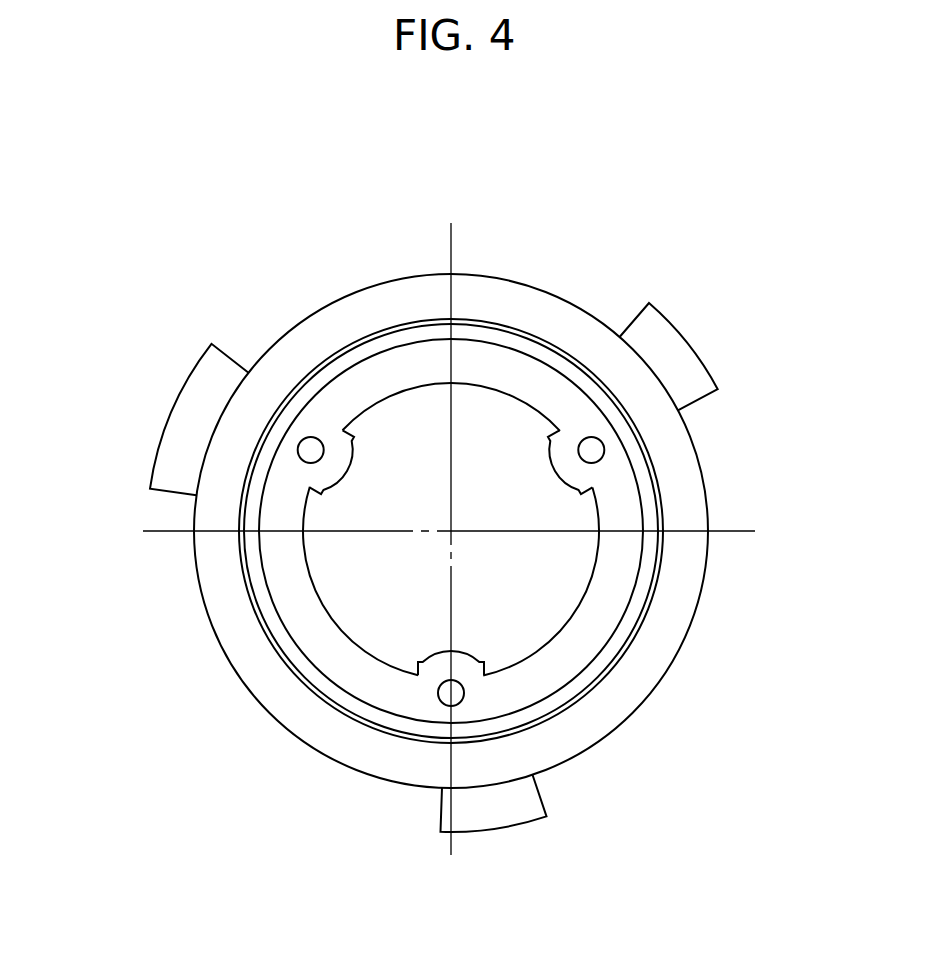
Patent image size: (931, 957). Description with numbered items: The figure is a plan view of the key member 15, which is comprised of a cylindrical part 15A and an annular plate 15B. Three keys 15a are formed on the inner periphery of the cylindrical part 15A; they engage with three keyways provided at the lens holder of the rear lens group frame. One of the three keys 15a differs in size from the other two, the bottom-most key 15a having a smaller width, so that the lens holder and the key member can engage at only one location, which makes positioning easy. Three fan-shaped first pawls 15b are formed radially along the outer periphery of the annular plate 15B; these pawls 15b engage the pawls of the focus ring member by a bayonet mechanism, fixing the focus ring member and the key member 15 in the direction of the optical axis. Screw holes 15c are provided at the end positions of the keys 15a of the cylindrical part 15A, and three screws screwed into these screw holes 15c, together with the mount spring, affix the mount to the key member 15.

The key member 15 is at (583, 227).
The cylindrical part 15A is at (573, 653).
The annular plate 15B is at (280, 692).
The key 15a is at (340, 462).
The fan-shaped pawl 15b is at (193, 417).
The screw hole 15c is at (309, 447).